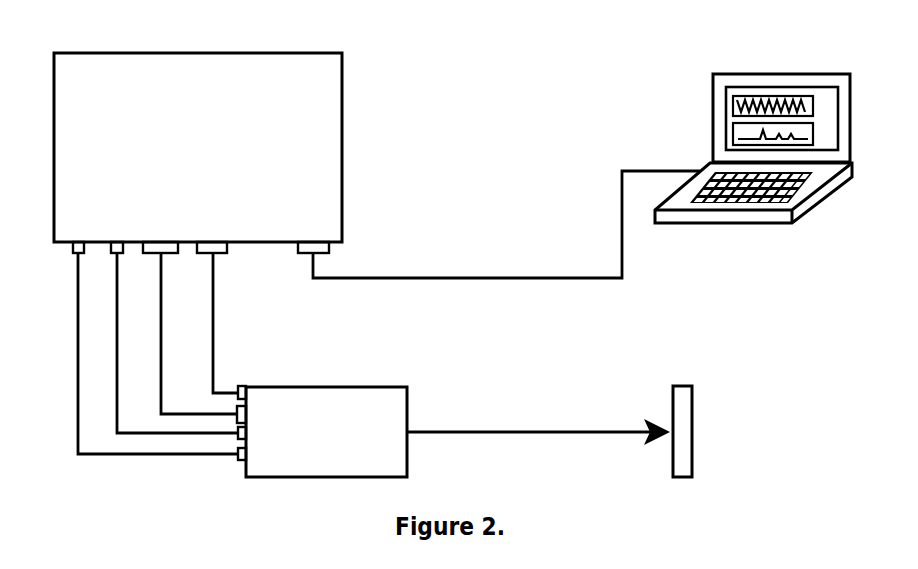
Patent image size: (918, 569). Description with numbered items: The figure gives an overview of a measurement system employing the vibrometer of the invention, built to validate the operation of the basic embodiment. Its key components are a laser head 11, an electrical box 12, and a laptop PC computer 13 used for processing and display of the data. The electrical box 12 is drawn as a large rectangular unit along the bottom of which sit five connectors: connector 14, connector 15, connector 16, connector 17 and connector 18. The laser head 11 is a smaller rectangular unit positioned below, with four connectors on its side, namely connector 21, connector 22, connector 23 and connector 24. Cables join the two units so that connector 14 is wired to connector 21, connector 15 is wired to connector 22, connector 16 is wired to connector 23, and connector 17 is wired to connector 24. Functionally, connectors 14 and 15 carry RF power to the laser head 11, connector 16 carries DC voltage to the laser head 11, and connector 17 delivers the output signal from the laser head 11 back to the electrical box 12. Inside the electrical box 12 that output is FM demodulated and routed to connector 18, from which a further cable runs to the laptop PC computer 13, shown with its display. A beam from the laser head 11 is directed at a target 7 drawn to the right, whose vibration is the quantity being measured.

The target 7 is at (678, 403).
The laser head 11 is at (363, 380).
The electrical box 12 is at (352, 180).
The laptop PC computer 13 is at (707, 138).
The connector 14 is at (74, 251).
The connector 15 is at (110, 251).
The connector 16 is at (143, 251).
The connector 17 is at (197, 251).
The connector 18 is at (292, 249).
The connector 21 is at (238, 465).
The connector 22 is at (232, 427).
The connector 23 is at (232, 407).
The connector 24 is at (240, 385).